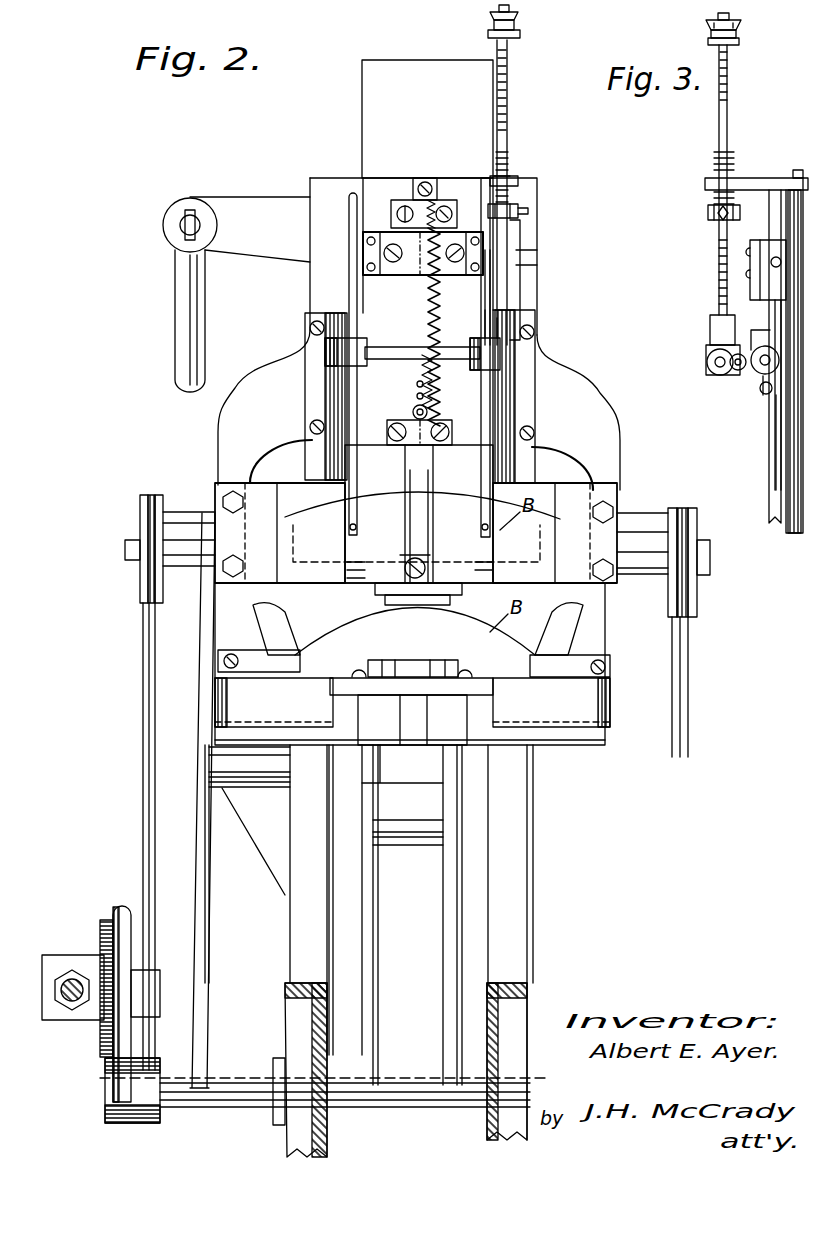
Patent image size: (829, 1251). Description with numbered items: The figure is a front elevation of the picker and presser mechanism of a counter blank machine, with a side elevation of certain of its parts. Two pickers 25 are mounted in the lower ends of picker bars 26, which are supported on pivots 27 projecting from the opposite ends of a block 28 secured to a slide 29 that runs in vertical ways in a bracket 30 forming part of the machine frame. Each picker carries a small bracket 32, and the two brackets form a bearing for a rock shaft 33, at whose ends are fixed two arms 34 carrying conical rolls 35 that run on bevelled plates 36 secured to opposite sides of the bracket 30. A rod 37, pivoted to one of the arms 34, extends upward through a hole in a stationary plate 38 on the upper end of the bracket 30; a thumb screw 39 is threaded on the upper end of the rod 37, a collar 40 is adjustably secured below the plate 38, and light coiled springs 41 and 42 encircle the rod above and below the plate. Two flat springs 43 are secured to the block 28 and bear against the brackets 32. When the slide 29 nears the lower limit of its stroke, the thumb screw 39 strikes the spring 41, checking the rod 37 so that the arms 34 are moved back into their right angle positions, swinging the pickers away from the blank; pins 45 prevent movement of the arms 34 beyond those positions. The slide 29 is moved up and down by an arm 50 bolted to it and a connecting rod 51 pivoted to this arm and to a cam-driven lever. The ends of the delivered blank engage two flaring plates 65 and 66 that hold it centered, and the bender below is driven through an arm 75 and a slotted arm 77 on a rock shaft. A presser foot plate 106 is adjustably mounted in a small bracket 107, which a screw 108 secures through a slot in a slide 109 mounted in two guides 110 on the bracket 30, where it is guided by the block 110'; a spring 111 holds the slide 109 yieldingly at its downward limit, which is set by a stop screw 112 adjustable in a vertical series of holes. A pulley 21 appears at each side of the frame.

In FIG. 2, the pulley 21 is at (138, 517).
In FIG. 2, the picker 25 is at (365, 517).
In FIG. 2, the picker bar 26 is at (350, 416).
In FIG. 3, the picker bar 26 is at (774, 526).
In FIG. 2, the pivot 27 is at (510, 262).
In FIG. 3, the pivot 27 is at (776, 257).
In FIG. 2, the block 28 is at (390, 280).
In FIG. 2, the slide 29 is at (375, 122).
In FIG. 2, the bracket 30 is at (318, 287).
In FIG. 3, the bracket 30 is at (800, 416).
In FIG. 2, the bracket 32 is at (490, 390).
In FIG. 3, the bracket 32 is at (768, 395).
In FIG. 2, the rock shaft 33 is at (392, 347).
In FIG. 3, the rock shaft 33 is at (718, 376).
In FIG. 3, the arm 34 is at (706, 348).
In FIG. 2, the conical roll 35 is at (325, 355).
In FIG. 3, the conical roll 35 is at (778, 356).
In FIG. 2, the bevelled plate 36 is at (330, 403).
In FIG. 3, the bevelled plate 36 is at (775, 478).
In FIG. 2, the rod 37 is at (507, 106).
In FIG. 3, the rod 37 is at (735, 92).
In FIG. 2, the stationary plate 38 is at (518, 178).
In FIG. 3, the stationary plate 38 is at (752, 178).
In FIG. 2, the thumb screw 39 is at (486, 20).
In FIG. 3, the thumb screw 39 is at (745, 35).
In FIG. 2, the collar 40 is at (515, 204).
In FIG. 3, the collar 40 is at (706, 210).
In FIG. 2, the coiled spring 41 is at (494, 160).
In FIG. 3, the coiled spring 41 is at (716, 160).
In FIG. 2, the coiled spring 42 is at (495, 190).
In FIG. 3, the coiled spring 42 is at (716, 194).
In FIG. 2, the flat spring 43 is at (365, 298).
In FIG. 3, the flat spring 43 is at (748, 295).
In FIG. 3, the pin 45 is at (762, 392).
In FIG. 2, the arm 50 is at (252, 197).
In FIG. 2, the connecting rod 51 is at (176, 324).
In FIG. 2, the plate 65 is at (565, 628).
In FIG. 2, the plate 66 is at (268, 626).
In FIG. 2, the arm 75 is at (440, 966).
In FIG. 2, the arm 77 is at (131, 930).
In FIG. 2, the plate 106 is at (432, 585).
In FIG. 2, the bracket 107 is at (403, 562).
In FIG. 2, the screw 108 is at (432, 560).
In FIG. 2, the slide 109 is at (440, 500).
In FIG. 2, the guide 110 is at (397, 410).
In FIG. 2, the block 110' is at (380, 186).
In FIG. 2, the spring 111 is at (440, 414).
In FIG. 2, the stop screw 112 is at (415, 450).